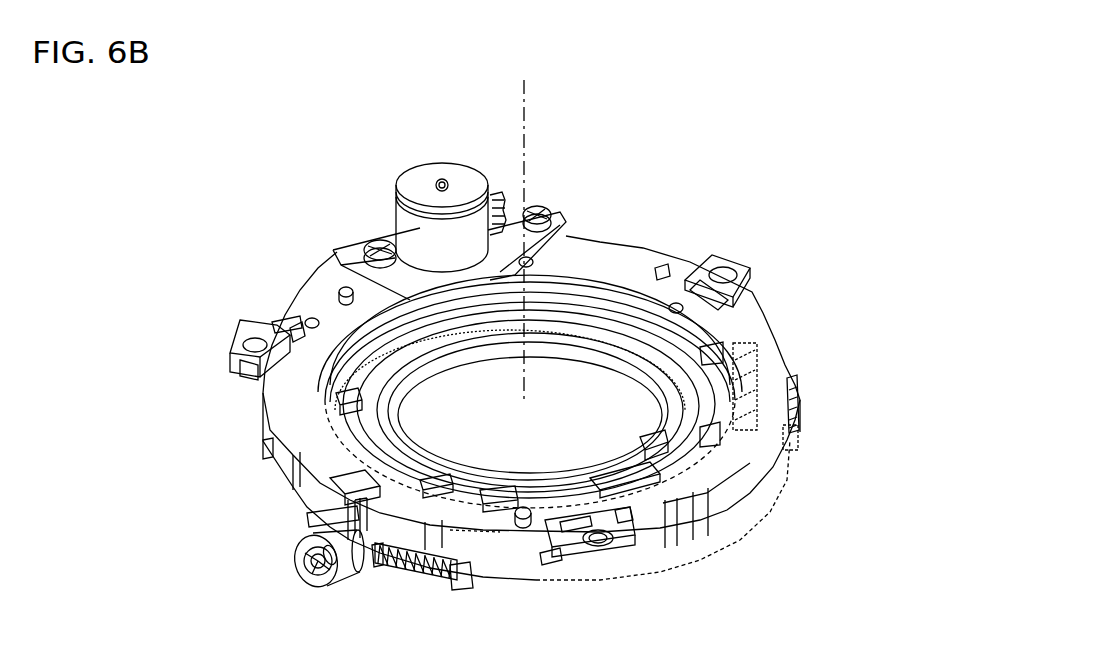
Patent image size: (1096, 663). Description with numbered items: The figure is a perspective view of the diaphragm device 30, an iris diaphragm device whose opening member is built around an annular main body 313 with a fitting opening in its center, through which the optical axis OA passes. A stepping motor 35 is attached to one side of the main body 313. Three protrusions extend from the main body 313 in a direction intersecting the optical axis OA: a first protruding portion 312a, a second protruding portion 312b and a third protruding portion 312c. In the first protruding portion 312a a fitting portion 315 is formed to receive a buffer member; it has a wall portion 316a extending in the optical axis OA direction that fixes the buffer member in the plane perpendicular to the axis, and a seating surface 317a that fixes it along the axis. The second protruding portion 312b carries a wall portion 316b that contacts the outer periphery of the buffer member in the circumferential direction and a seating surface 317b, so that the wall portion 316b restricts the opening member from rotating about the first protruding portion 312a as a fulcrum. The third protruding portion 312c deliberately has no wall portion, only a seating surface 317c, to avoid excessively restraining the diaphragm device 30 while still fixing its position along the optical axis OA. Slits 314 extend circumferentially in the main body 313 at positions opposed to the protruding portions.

The diaphragm device 30 is at (803, 160).
The optical axis OA is at (523, 133).
The stepping motor 35 is at (435, 160).
The main body 313 is at (730, 328).
The slits 314 is at (660, 275).
The fitting portion 315 is at (785, 547).
The first protruding portion 312a is at (632, 532).
The second protruding portion 312b is at (230, 343).
The third protruding portion 312c is at (752, 267).
The wall portion 316a is at (630, 535).
The wall portion 316b is at (257, 318).
The seating surface 317a is at (613, 535).
The seating surface 317b is at (243, 333).
The seating surface 317c is at (716, 262).